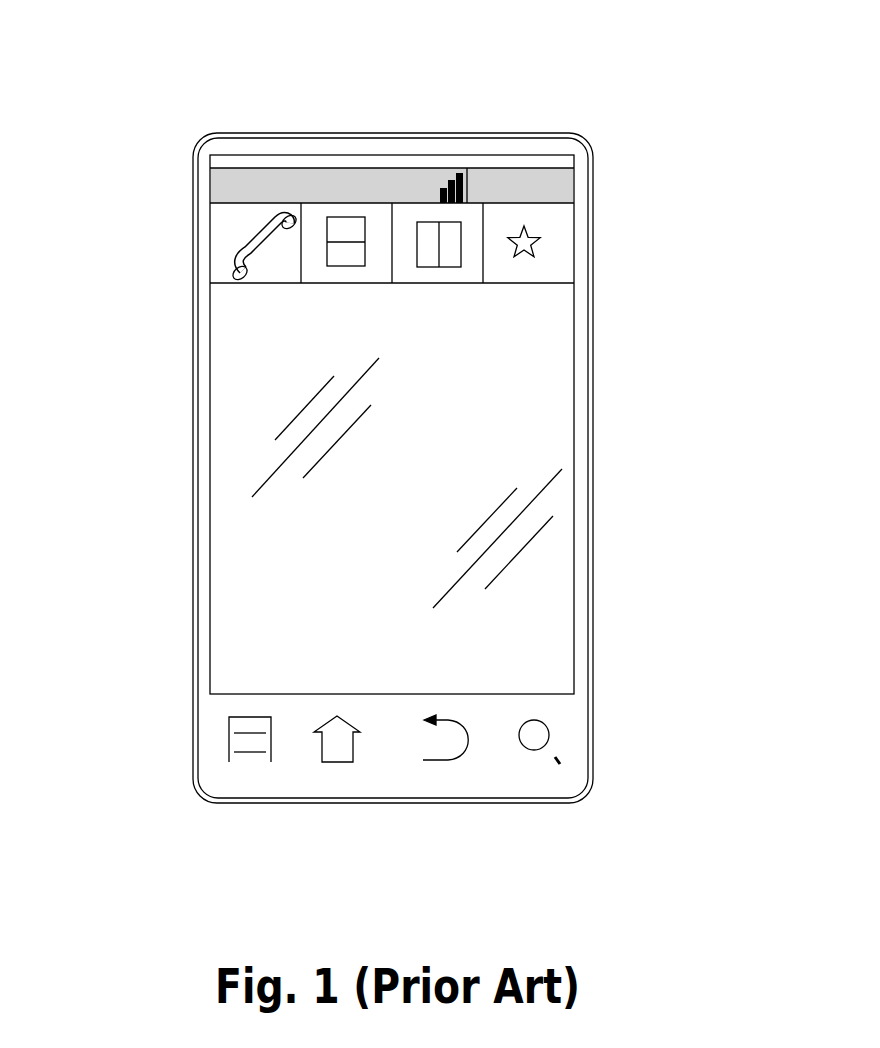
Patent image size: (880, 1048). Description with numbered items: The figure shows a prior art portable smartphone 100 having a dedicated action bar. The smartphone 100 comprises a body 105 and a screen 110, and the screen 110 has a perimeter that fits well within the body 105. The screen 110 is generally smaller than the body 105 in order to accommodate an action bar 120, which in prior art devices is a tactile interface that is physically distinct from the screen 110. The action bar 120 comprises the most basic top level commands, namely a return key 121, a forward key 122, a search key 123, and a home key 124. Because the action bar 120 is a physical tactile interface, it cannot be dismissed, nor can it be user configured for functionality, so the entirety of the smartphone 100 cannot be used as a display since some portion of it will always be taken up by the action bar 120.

The portable smartphone 100 is at (685, 128).
The body 105 is at (520, 133).
The screen 110 is at (228, 360).
The action bar 120 is at (566, 734).
The return key 121 is at (434, 762).
The forward key 122 is at (259, 762).
The search key 123 is at (538, 752).
The home key 124 is at (348, 762).